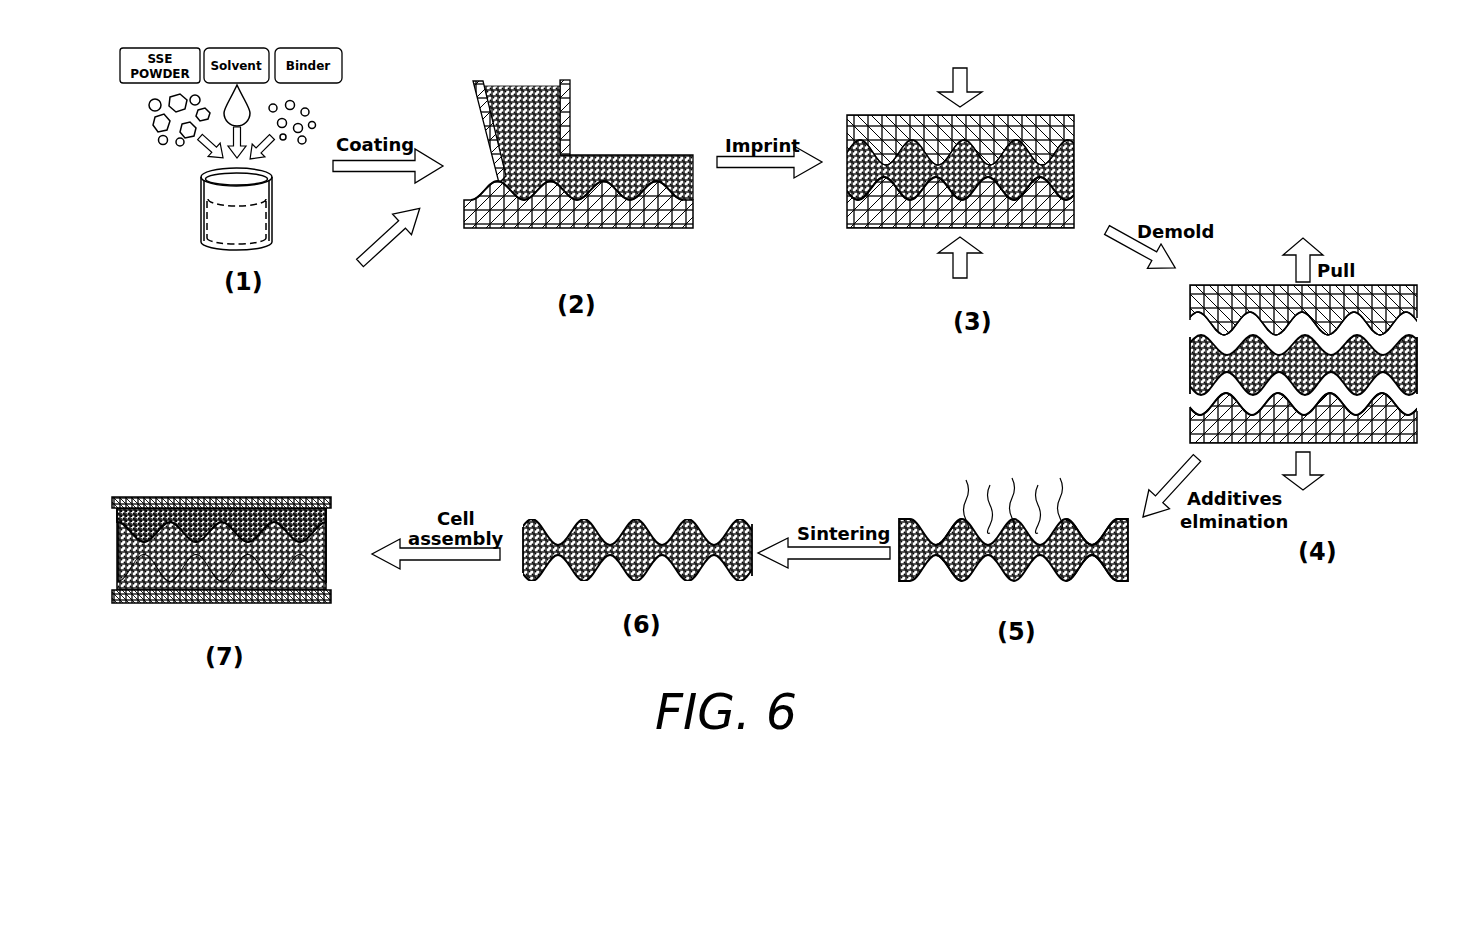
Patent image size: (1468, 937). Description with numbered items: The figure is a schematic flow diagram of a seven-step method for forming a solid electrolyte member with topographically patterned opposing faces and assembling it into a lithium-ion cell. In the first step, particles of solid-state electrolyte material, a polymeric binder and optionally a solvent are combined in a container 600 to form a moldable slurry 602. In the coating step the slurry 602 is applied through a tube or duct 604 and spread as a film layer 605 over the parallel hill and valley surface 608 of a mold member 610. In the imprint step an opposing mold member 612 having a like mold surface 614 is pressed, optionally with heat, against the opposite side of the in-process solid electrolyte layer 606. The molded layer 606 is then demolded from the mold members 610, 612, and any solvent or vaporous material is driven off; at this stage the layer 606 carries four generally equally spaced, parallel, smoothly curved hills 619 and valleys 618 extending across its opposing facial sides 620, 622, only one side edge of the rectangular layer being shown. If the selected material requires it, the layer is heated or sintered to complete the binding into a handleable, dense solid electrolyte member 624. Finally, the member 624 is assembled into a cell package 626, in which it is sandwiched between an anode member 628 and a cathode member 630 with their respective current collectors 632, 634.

The container 600 is at (197, 208).
The slurry 602 is at (518, 85).
The tube or duct 604 is at (570, 117).
The film layer 605 is at (672, 155).
The solid electrolyte layer 606 is at (1075, 165).
The hill and valley surface 608 is at (627, 190).
The mold member 610 is at (505, 230).
The opposing mold member 612 is at (908, 115).
The mold surface 614 is at (1002, 160).
The valleys 618 is at (1093, 545).
The hills 619 is at (958, 520).
The facial side 620 is at (902, 520).
The facial side 622 is at (921, 580).
The solid electrolyte layer member 624 is at (616, 518).
The cell package 626 is at (215, 487).
The anode member 628 is at (326, 513).
The cathode member 630 is at (327, 585).
The current collector 632 is at (137, 497).
The current collector 634 is at (135, 603).